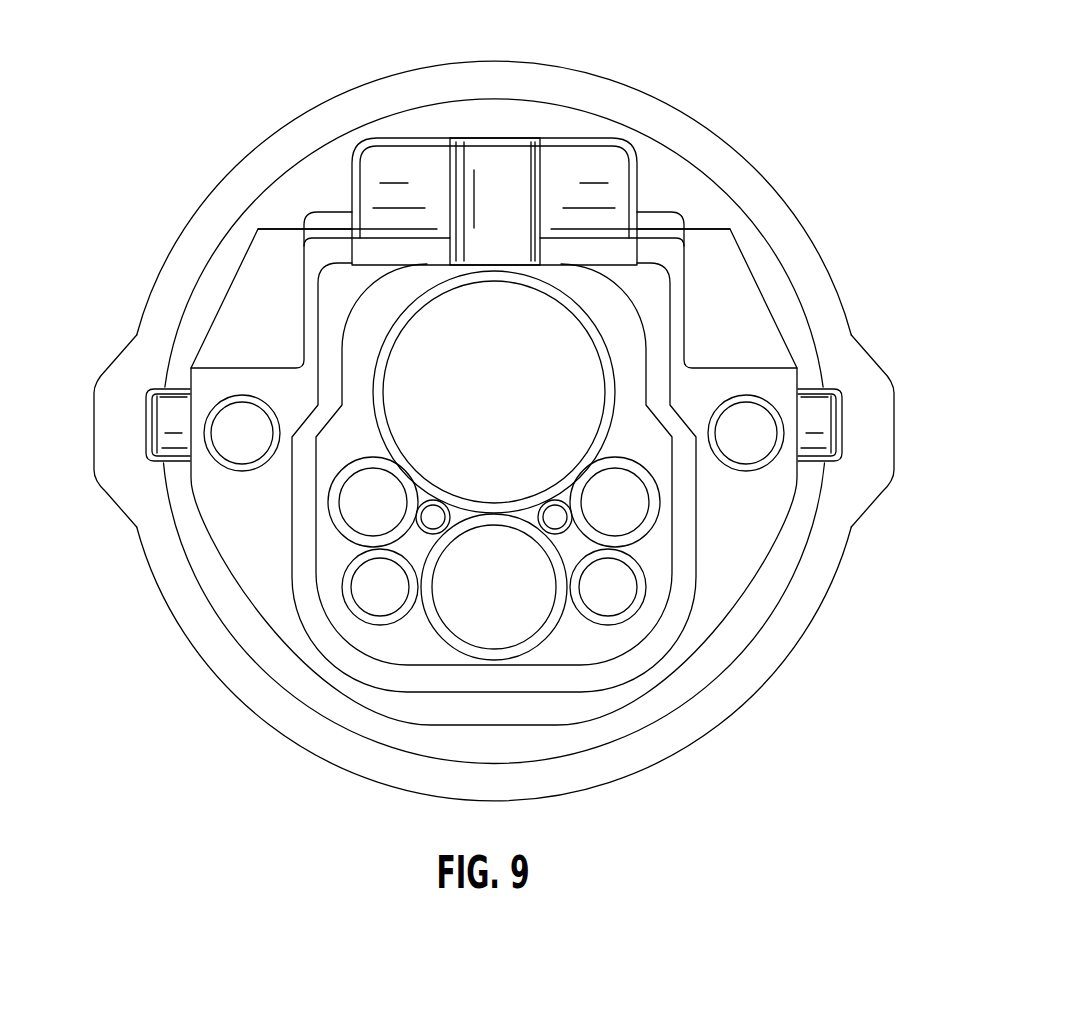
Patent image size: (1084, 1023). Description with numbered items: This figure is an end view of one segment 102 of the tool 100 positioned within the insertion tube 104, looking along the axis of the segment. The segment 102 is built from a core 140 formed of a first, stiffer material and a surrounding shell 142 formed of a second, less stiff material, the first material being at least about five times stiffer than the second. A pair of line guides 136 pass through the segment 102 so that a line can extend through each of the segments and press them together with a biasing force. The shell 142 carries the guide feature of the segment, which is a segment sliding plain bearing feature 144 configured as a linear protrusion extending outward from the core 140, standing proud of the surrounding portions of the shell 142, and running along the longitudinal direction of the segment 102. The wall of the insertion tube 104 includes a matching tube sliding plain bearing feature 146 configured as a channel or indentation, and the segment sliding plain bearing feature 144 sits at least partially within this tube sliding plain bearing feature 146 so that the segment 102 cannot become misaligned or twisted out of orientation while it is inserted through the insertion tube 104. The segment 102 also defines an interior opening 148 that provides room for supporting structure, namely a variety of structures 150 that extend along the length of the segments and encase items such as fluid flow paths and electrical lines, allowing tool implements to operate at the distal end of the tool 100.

The tool 100 is at (835, 71).
The segment 102 is at (666, 196).
The insertion tube 104 is at (797, 216).
The line guides 136 is at (235, 443).
The core 140 is at (640, 655).
The shell 142 is at (733, 573).
The segment sliding plain bearing feature 144 is at (168, 428).
The tube sliding plain bearing feature 146 is at (155, 463).
The interior opening 148 is at (373, 313).
The structures 150 is at (557, 287).